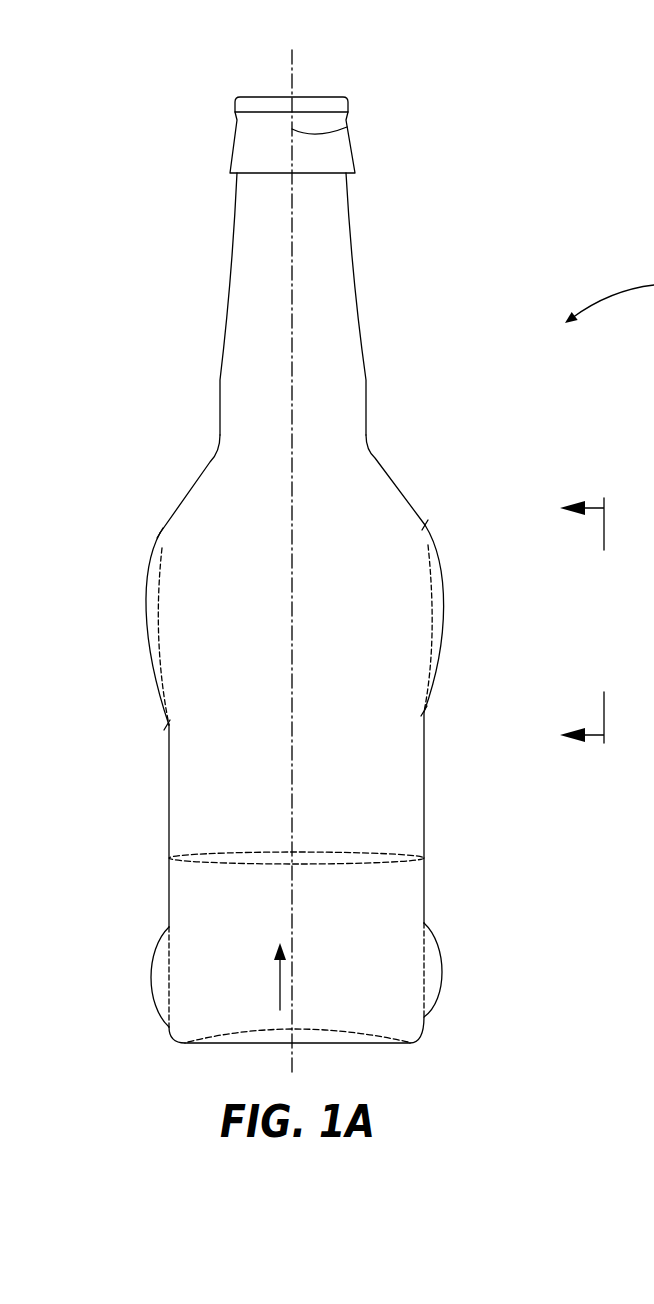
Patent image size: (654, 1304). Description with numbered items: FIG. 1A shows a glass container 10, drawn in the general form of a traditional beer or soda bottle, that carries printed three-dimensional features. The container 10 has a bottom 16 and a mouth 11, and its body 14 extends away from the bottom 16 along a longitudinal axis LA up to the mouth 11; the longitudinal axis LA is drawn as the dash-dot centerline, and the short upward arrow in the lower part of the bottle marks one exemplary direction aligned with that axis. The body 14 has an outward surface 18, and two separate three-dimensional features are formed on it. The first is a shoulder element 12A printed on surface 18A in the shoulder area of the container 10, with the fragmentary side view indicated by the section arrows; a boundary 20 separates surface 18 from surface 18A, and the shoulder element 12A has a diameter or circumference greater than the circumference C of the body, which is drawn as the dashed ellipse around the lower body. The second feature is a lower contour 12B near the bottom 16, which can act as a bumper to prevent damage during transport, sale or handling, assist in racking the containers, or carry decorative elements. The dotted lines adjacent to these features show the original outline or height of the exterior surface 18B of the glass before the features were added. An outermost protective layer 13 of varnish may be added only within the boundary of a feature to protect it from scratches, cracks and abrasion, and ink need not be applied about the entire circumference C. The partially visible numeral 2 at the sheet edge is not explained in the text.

The container 10 is at (540, 72).
The mouth 11 is at (322, 96).
The longitudinal axis LA is at (347, 127).
The body 14 is at (230, 250).
The surface 18 is at (367, 390).
The surface 18A is at (148, 577).
The exterior surface 18B is at (170, 972).
The shoulder element 12A is at (148, 622).
The lower contour 12B is at (162, 935).
The boundary 20 is at (160, 533).
The circumference C is at (210, 853).
The protective layer 13 is at (155, 995).
The bottom 16 is at (237, 1043).
The reference numeral 2 is at (648, 596).